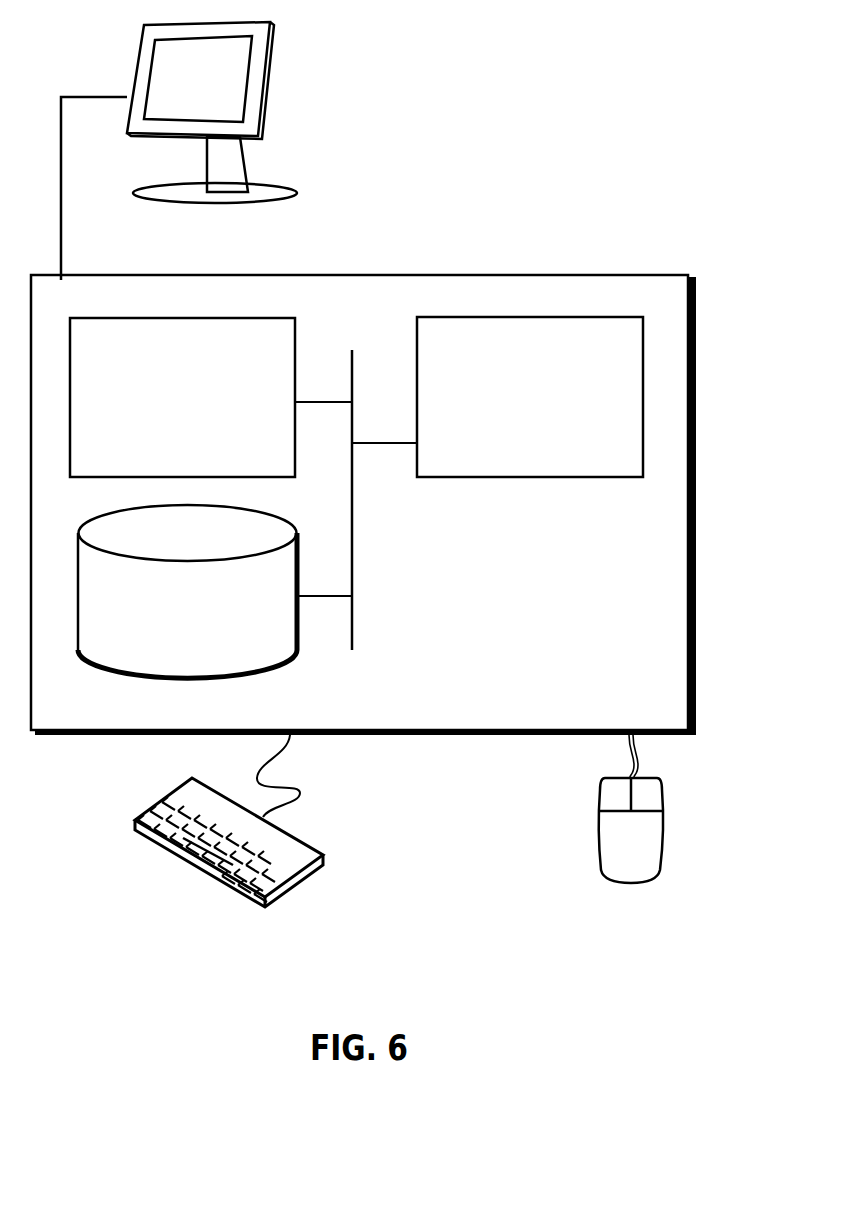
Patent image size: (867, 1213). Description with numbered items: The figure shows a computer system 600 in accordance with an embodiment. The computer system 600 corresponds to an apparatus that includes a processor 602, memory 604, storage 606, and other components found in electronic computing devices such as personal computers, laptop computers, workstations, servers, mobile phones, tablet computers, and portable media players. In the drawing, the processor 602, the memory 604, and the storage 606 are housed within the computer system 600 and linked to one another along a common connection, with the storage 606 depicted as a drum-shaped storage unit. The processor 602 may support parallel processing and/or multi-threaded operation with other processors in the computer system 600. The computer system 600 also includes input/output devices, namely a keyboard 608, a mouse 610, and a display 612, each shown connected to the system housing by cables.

The computer system 600 is at (407, 255).
The processor 602 is at (511, 410).
The memory 604 is at (162, 408).
The storage 606 is at (167, 620).
The keyboard 608 is at (152, 842).
The mouse 610 is at (611, 851).
The display 612 is at (212, 127).